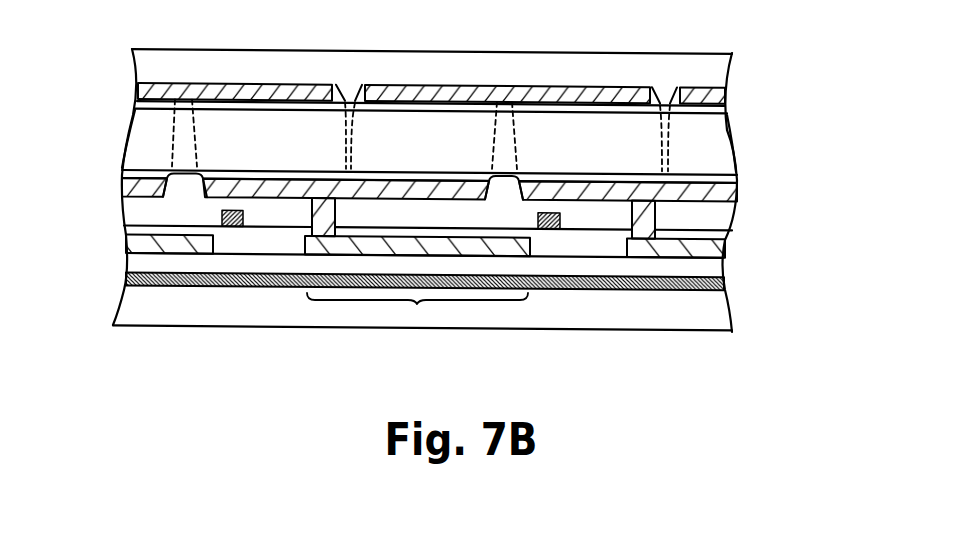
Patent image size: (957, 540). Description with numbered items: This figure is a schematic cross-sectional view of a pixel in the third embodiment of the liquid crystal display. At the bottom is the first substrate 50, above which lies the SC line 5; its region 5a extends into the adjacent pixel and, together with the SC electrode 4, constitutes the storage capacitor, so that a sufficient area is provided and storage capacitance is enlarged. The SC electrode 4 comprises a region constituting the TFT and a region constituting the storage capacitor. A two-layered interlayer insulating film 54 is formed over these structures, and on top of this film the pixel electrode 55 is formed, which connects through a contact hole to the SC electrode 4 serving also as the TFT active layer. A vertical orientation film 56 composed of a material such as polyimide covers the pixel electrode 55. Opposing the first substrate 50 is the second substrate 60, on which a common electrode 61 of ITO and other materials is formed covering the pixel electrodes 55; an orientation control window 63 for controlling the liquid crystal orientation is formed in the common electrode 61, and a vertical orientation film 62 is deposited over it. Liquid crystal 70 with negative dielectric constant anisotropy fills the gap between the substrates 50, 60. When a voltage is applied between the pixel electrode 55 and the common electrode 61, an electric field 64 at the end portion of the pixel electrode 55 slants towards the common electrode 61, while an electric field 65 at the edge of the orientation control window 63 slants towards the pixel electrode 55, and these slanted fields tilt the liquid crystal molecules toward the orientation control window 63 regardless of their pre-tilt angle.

The second substrate 60 is at (712, 70).
The common electrode 61 is at (712, 94).
The vertical orientation film 62 is at (713, 110).
The liquid crystal 70 is at (712, 148).
The vertical orientation film 56 is at (726, 181).
The pixel electrode 55 is at (728, 194).
The interlayer insulating film 54 is at (722, 235).
The SC electrode 4 is at (718, 253).
The SC line 5 is at (720, 283).
The region of the SC line 5a is at (417, 310).
The first substrate 50 is at (725, 319).
The orientation control window 63 is at (350, 90).
The electric field 64 is at (195, 130).
The electric field 65 is at (348, 134).